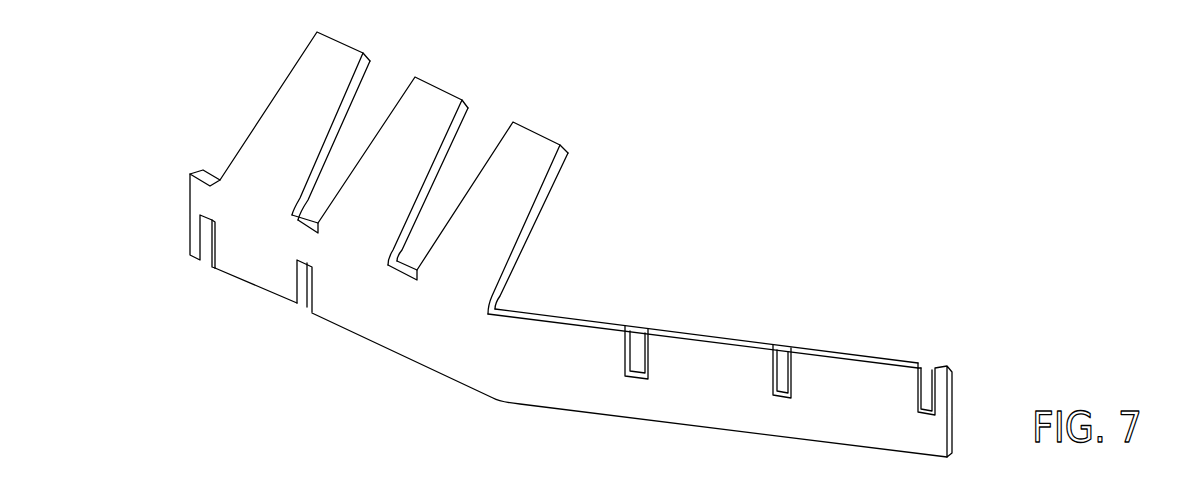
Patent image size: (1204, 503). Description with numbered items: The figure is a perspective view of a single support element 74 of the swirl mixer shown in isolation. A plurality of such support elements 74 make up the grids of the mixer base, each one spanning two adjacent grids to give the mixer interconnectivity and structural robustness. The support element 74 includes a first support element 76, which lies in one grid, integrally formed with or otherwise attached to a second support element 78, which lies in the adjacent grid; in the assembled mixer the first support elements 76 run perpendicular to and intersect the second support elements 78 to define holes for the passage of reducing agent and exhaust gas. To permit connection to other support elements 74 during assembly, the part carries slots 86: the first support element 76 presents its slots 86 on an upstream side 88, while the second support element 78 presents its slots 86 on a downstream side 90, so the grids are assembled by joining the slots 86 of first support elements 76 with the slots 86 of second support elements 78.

The support element 74 is at (562, 262).
The first support element 76 is at (242, 227).
The second support element 78 is at (695, 403).
The slots 86 is at (305, 290).
The upstream side 88 is at (250, 283).
The downstream side 90 is at (867, 359).